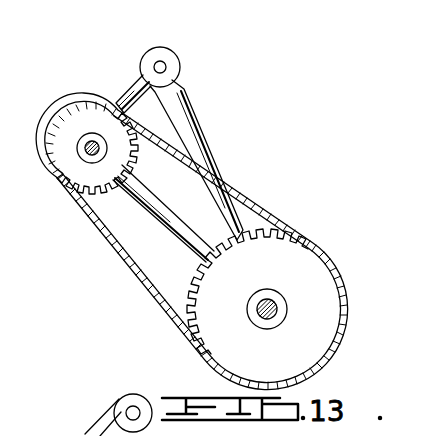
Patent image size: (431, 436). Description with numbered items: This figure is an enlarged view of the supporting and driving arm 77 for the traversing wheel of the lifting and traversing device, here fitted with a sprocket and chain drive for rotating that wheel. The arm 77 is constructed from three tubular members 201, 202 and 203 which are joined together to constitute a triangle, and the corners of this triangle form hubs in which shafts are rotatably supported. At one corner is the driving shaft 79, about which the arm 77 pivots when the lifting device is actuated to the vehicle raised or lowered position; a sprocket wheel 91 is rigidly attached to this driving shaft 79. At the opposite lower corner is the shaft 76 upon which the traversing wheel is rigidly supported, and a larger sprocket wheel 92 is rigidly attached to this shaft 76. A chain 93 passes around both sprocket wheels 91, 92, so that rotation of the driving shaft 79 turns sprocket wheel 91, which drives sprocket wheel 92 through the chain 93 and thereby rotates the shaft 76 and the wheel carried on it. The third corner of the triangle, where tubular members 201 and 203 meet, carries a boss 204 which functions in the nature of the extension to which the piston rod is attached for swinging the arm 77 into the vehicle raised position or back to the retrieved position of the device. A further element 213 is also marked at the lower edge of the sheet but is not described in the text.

The arm 77 is at (268, 160).
The chain 93 is at (132, 272).
The sprocket wheel 91 is at (91, 181).
The driving shaft 79 is at (81, 148).
The sprocket wheel 92 is at (213, 315).
The shaft 76 is at (263, 315).
The boss 204 is at (168, 68).
The tubular member 203 is at (127, 94).
The tubular member 201 is at (205, 143).
The tubular member 202 is at (153, 197).
The pulley 213 is at (99, 415).